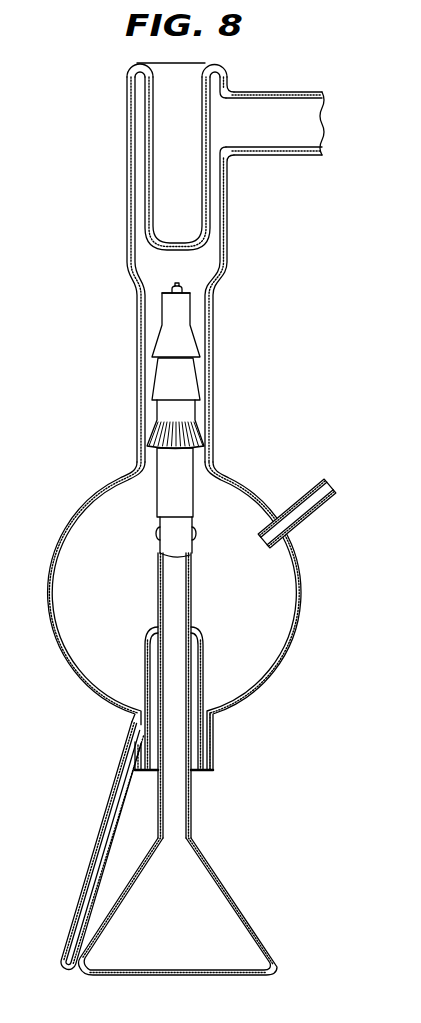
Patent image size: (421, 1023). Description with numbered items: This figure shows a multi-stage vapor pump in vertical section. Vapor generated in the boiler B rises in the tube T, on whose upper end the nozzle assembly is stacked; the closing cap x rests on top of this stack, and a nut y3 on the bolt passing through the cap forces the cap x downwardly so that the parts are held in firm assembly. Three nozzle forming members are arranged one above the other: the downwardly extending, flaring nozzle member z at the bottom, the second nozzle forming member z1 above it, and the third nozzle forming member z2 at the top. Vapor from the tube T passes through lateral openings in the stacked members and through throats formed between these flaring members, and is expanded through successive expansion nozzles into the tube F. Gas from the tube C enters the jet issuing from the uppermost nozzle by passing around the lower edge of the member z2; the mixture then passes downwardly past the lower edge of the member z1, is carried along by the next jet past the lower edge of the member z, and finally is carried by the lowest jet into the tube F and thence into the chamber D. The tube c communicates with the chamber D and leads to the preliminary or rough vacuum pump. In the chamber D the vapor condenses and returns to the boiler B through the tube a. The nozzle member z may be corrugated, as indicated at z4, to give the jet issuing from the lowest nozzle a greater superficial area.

The tube F is at (140, 378).
The tube C is at (275, 123).
The closing cap x is at (170, 290).
The nut y3 is at (183, 289).
The third nozzle forming member z2 is at (193, 334).
The second nozzle forming member z1 is at (194, 390).
The nozzle member z is at (198, 427).
The corrugations z4 is at (150, 434).
The tube T is at (192, 587).
The chamber D is at (300, 628).
The tube c is at (318, 503).
The tube a is at (105, 812).
The boiler B is at (226, 898).